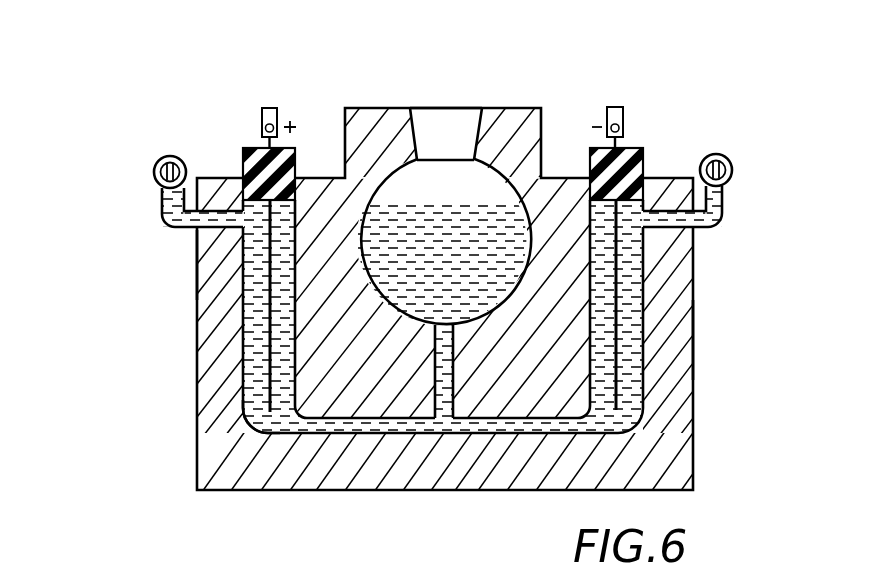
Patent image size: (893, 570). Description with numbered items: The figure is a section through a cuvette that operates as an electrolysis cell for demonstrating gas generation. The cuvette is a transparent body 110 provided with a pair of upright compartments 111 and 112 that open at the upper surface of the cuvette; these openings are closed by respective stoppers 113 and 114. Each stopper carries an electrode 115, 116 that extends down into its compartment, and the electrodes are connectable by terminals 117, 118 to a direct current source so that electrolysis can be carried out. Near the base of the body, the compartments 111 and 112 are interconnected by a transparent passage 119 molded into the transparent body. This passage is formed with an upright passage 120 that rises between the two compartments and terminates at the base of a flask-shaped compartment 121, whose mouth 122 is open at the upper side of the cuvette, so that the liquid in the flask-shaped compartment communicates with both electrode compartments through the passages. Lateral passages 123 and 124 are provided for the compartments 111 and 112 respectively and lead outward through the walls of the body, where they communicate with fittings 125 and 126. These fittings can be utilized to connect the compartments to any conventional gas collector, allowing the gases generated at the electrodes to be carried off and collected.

The transparent body 110 is at (198, 375).
The upright compartment 111 is at (245, 398).
The upright compartment 112 is at (643, 357).
The stopper 113 is at (243, 149).
The stopper 114 is at (645, 159).
The electrode 115 is at (247, 299).
The electrode 116 is at (617, 289).
The terminal 117 is at (262, 125).
The terminal 118 is at (625, 113).
The transparent passage 119 is at (503, 433).
The upright passage 120 is at (435, 363).
The flask-shaped compartment 121 is at (492, 165).
The mouth 122 is at (476, 155).
The lateral passage 123 is at (198, 252).
The lateral passage 124 is at (678, 226).
The fitting 125 is at (162, 210).
The fitting 126 is at (723, 194).